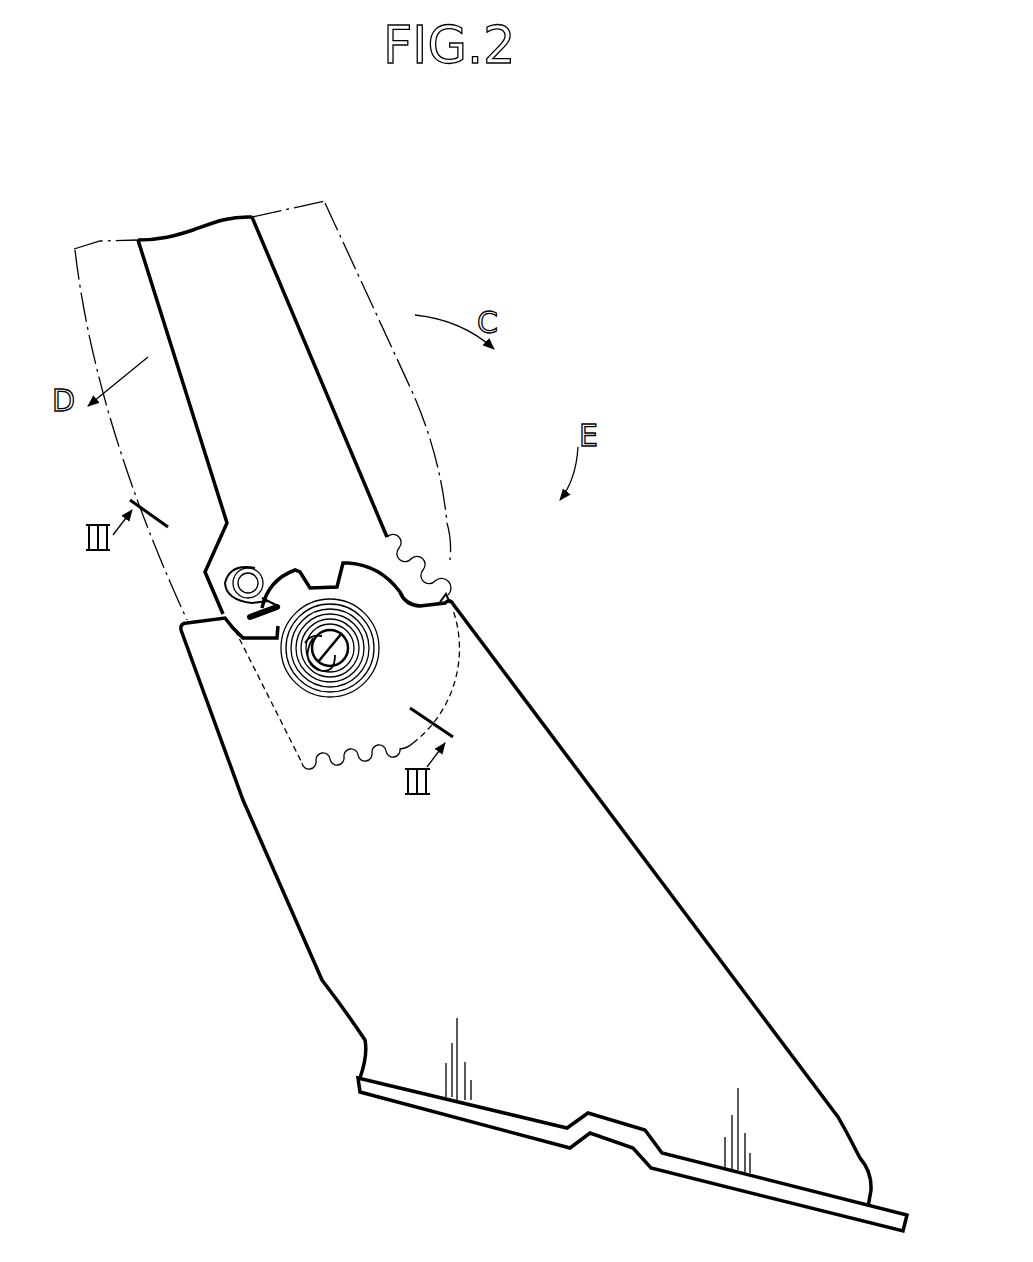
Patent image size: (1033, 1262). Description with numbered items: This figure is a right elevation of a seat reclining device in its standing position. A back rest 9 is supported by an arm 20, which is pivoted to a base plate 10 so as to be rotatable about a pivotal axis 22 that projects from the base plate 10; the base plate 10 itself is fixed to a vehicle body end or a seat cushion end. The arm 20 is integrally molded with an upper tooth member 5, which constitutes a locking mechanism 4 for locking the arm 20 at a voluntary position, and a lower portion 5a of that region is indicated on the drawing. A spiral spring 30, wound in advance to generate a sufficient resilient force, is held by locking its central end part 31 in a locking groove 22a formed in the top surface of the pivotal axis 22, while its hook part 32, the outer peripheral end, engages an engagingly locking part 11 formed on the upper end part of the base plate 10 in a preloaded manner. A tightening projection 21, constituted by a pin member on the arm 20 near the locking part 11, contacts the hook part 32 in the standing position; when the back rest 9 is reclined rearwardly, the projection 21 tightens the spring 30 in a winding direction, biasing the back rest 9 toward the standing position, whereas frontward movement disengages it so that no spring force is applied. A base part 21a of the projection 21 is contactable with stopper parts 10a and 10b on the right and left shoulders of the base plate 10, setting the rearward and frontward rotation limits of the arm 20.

The locking mechanism 4 is at (318, 790).
The upper tooth member 5 is at (402, 560).
The seal member lower portion 5a is at (360, 767).
The back rest 9 is at (345, 242).
The base plate 10 is at (660, 873).
The stopper part 10a is at (207, 612).
The stopper part 10b is at (428, 596).
The engagingly locking part 11 is at (293, 568).
The arm 20 is at (330, 390).
The tightening projection 21 is at (256, 568).
The base part 21a is at (240, 567).
The pivotal axis 22 is at (337, 652).
The locking groove 22a is at (305, 643).
The spiral spring 30 is at (378, 667).
The central end part 31 is at (320, 637).
The hook part 32 is at (217, 607).